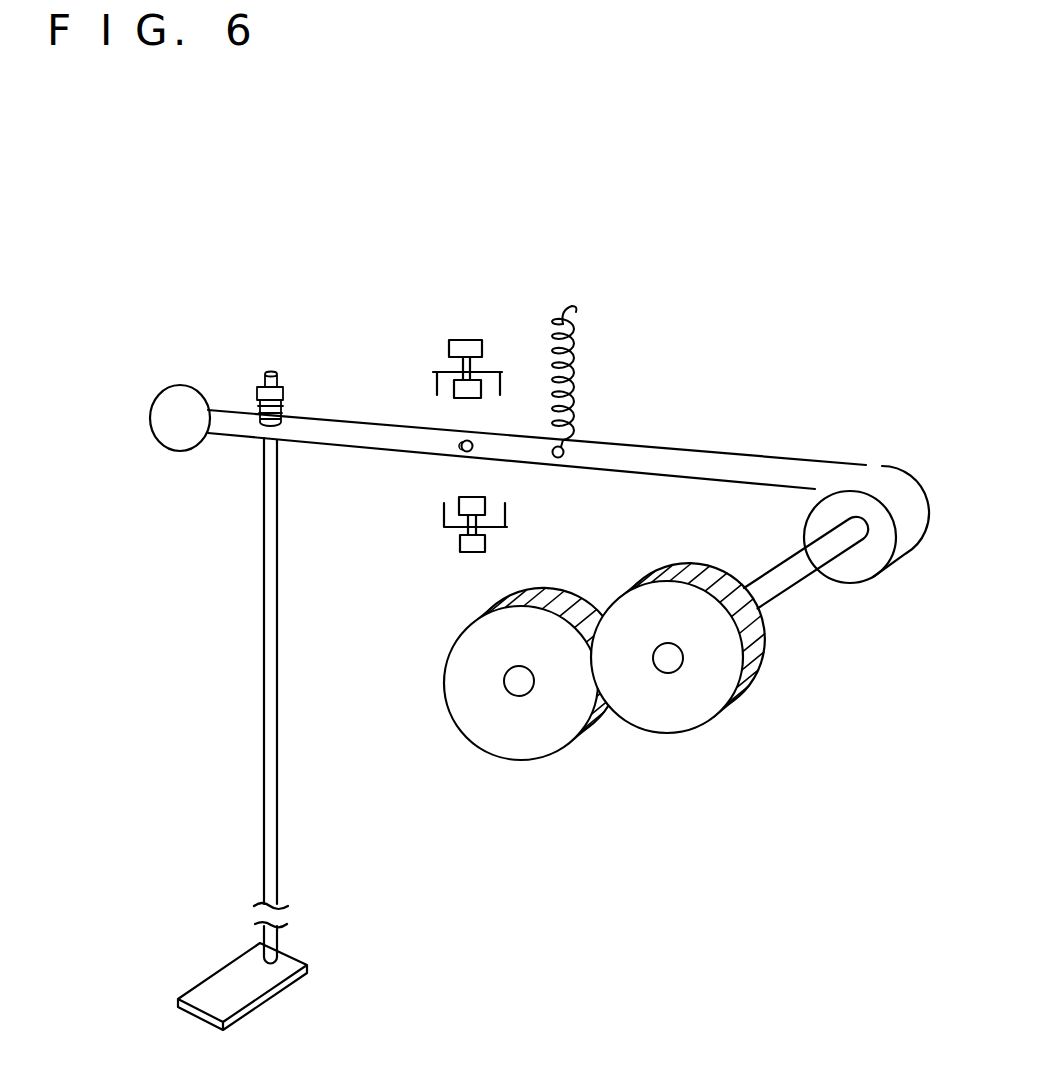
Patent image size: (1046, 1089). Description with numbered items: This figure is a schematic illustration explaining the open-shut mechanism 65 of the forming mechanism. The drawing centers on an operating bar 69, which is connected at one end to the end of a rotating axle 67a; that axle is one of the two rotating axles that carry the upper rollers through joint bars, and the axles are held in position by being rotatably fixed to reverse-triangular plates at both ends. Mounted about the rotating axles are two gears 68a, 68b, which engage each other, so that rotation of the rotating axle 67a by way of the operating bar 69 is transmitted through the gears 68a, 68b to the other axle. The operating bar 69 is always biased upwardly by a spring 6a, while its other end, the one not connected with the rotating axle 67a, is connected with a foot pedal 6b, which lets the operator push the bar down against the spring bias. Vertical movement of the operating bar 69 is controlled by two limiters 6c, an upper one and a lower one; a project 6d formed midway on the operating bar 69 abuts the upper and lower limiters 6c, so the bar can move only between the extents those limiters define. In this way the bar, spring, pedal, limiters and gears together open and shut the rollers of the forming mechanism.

The open-shut mechanism 65 is at (713, 270).
The operating bar 69 is at (745, 460).
The rotating axle 67a is at (788, 582).
The gear 68a is at (688, 725).
The gear 68b is at (527, 755).
The spring 6a is at (576, 354).
The limiters 6c is at (447, 348).
The project 6d is at (458, 443).
The foot pedal 6b is at (257, 988).